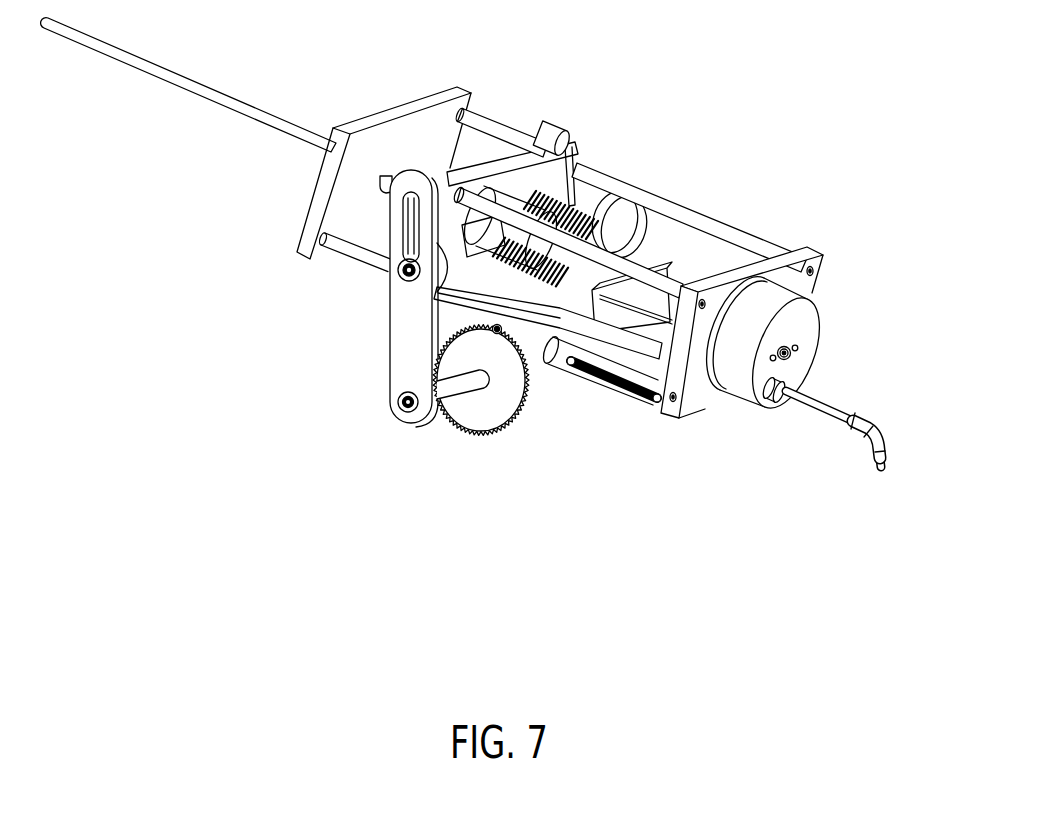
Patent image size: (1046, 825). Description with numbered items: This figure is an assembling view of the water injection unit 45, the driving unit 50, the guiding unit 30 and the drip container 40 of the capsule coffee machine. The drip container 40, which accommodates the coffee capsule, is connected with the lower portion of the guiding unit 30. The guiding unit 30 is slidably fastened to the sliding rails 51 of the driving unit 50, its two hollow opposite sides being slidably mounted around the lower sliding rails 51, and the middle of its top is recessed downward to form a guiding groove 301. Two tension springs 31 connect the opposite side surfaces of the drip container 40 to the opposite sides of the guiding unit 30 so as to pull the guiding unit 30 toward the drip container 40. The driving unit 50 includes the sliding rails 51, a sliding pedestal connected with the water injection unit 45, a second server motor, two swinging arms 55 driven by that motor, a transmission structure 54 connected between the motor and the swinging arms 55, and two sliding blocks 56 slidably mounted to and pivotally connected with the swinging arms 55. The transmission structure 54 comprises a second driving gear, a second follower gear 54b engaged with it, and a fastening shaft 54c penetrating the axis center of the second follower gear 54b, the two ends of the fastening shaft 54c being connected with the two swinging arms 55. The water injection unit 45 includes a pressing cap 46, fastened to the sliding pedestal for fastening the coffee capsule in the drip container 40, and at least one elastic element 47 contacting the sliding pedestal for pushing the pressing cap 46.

The guiding unit 30 is at (560, 382).
The tension springs 31 is at (620, 389).
The guiding groove 301 is at (693, 405).
The drip container 40 is at (834, 342).
The water injection unit 45 is at (686, 161).
The pressing cap 46 is at (687, 219).
The elastic element 47 is at (620, 204).
The driving unit 50 is at (365, 386).
The sliding rails 51 is at (500, 121).
The transmission structure 54 is at (460, 457).
The second follower gear 54b is at (500, 420).
The fastening shaft 54c is at (443, 398).
The swinging arms 55 is at (400, 336).
The sliding blocks 56 is at (348, 263).